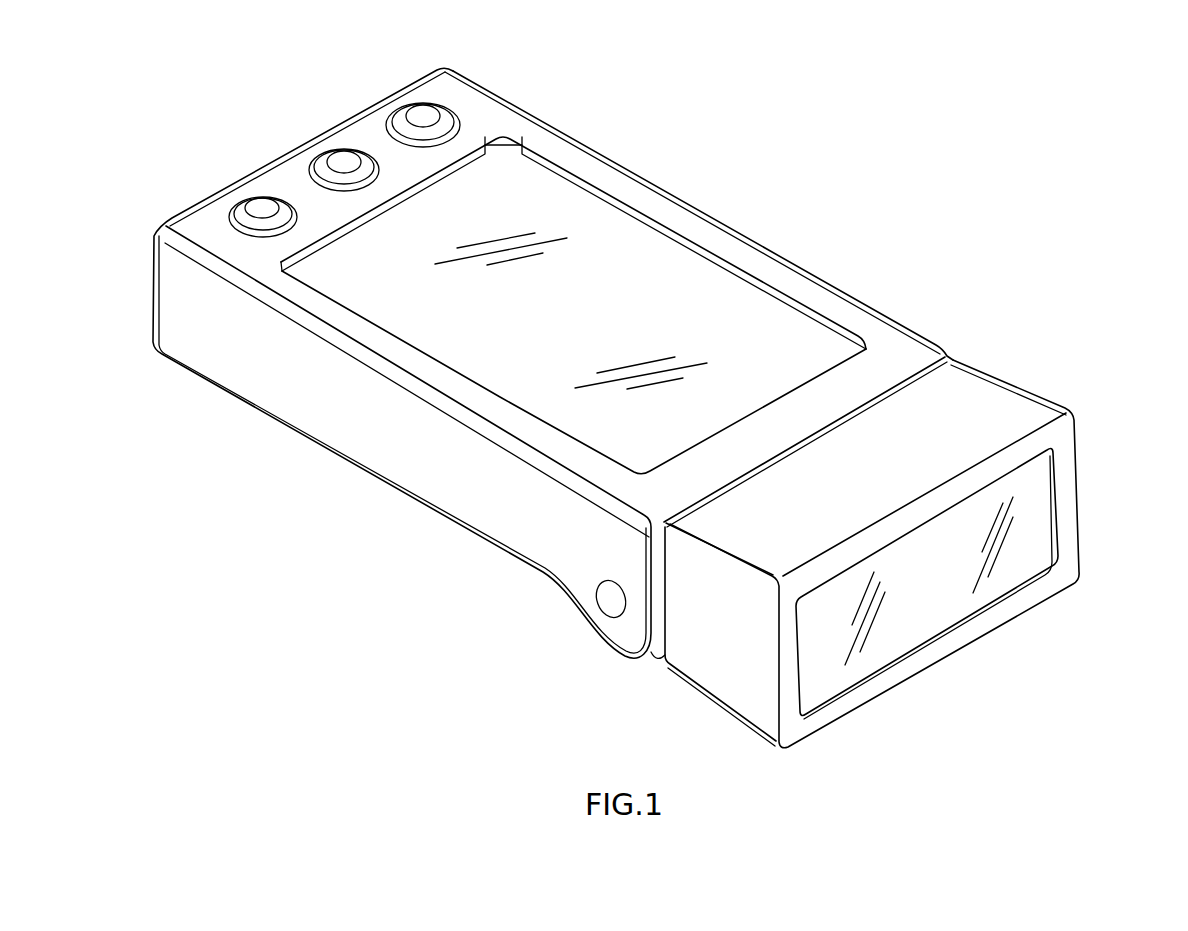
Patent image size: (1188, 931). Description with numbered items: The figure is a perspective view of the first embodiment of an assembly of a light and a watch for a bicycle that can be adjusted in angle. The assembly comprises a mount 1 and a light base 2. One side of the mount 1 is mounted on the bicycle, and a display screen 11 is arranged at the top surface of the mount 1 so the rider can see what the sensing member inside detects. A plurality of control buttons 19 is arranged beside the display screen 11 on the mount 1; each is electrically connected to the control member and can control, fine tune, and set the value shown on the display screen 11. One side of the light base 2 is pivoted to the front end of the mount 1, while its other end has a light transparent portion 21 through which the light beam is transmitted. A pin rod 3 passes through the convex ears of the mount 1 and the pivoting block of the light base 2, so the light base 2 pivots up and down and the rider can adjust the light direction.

The mount 1 is at (659, 408).
The light base 2 is at (908, 536).
The pin rod 3 is at (603, 598).
The display screen 11 is at (652, 250).
The control buttons 19 is at (341, 160).
The light transparent portion 21 is at (1038, 502).